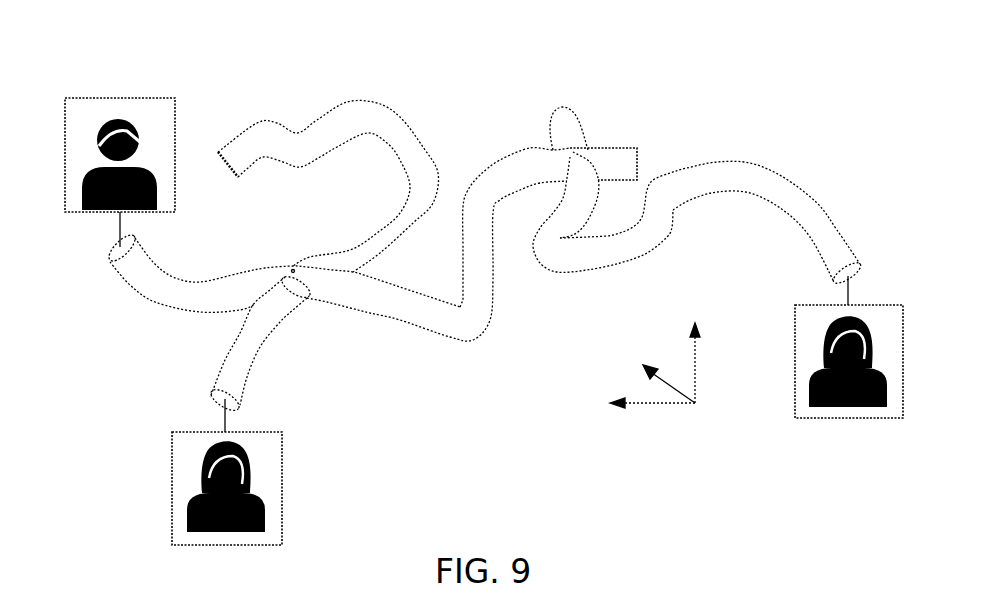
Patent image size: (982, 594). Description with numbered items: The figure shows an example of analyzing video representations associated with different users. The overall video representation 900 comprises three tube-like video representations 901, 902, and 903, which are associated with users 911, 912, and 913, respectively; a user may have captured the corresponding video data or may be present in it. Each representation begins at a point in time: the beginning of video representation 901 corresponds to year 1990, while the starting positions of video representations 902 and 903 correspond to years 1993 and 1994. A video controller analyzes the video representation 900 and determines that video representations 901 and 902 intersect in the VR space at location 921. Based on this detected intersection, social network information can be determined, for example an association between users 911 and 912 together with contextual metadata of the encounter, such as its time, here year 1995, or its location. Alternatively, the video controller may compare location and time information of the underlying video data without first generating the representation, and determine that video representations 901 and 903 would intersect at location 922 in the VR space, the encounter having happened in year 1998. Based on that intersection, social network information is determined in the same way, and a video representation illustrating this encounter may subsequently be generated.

The video representation 900 is at (231, 67).
The video representation 901 is at (208, 279).
The video representation 902 is at (217, 374).
The video representation 903 is at (797, 183).
The user 911 is at (83, 98).
The user 912 is at (188, 432).
The user 913 is at (807, 305).
The location 921 is at (293, 272).
The location 922 is at (568, 150).
The year 1990 is at (98, 238).
The year 1993 is at (252, 409).
The year 1994 is at (870, 282).
The year 1995 is at (309, 307).
The year 1998 is at (604, 150).